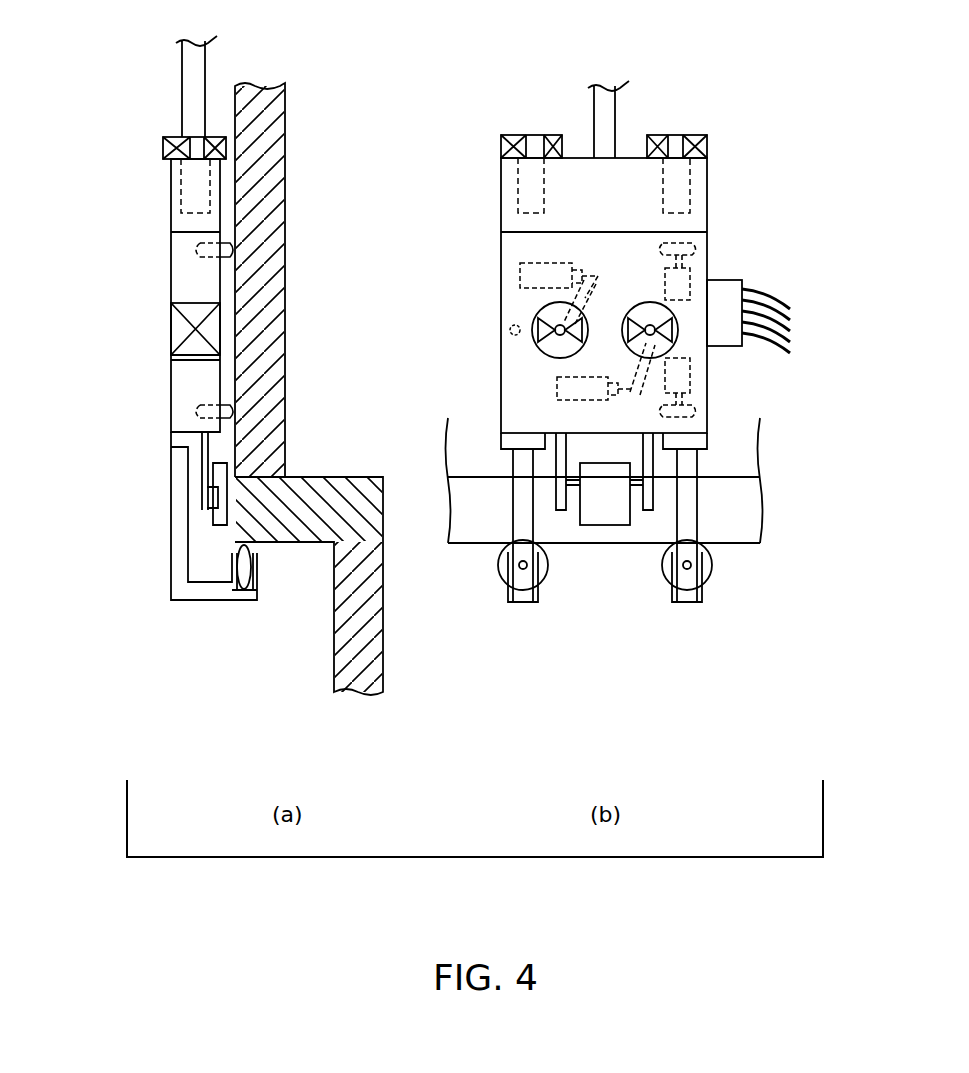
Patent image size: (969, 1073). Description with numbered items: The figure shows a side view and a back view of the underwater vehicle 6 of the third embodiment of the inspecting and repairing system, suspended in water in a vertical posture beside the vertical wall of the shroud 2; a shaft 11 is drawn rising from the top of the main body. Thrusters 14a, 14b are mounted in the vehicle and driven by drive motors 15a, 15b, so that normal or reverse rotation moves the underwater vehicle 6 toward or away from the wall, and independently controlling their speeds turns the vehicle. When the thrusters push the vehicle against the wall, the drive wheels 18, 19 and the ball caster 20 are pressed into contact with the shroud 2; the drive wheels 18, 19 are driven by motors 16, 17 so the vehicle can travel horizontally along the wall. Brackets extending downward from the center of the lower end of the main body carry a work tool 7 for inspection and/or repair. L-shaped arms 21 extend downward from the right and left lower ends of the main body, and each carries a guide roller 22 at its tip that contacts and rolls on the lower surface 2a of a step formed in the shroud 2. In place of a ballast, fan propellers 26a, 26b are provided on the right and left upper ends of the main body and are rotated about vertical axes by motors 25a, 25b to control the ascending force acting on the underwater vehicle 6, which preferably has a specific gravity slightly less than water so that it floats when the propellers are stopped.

The shroud 2 is at (272, 165).
The lower surface of a step 2a is at (300, 525).
The underwater vehicle 6 is at (148, 278).
The work tool 7 is at (224, 478).
The support shaft 11 is at (207, 56).
The thruster 14a is at (552, 345).
The thruster 14b is at (178, 326).
The drive motor 15a is at (520, 276).
The drive motor 15b is at (557, 389).
The motor 16 is at (690, 280).
The motor 17 is at (690, 378).
The drive wheel 18 is at (205, 248).
The drive wheel 19 is at (207, 408).
The ball caster 20 is at (512, 328).
The L-shaped arm 21 is at (180, 548).
The guide roller 22 is at (252, 574).
The motor 25a is at (518, 182).
The motor 25b is at (190, 185).
The fan propeller 26a is at (501, 147).
The fan propeller 26b is at (163, 148).